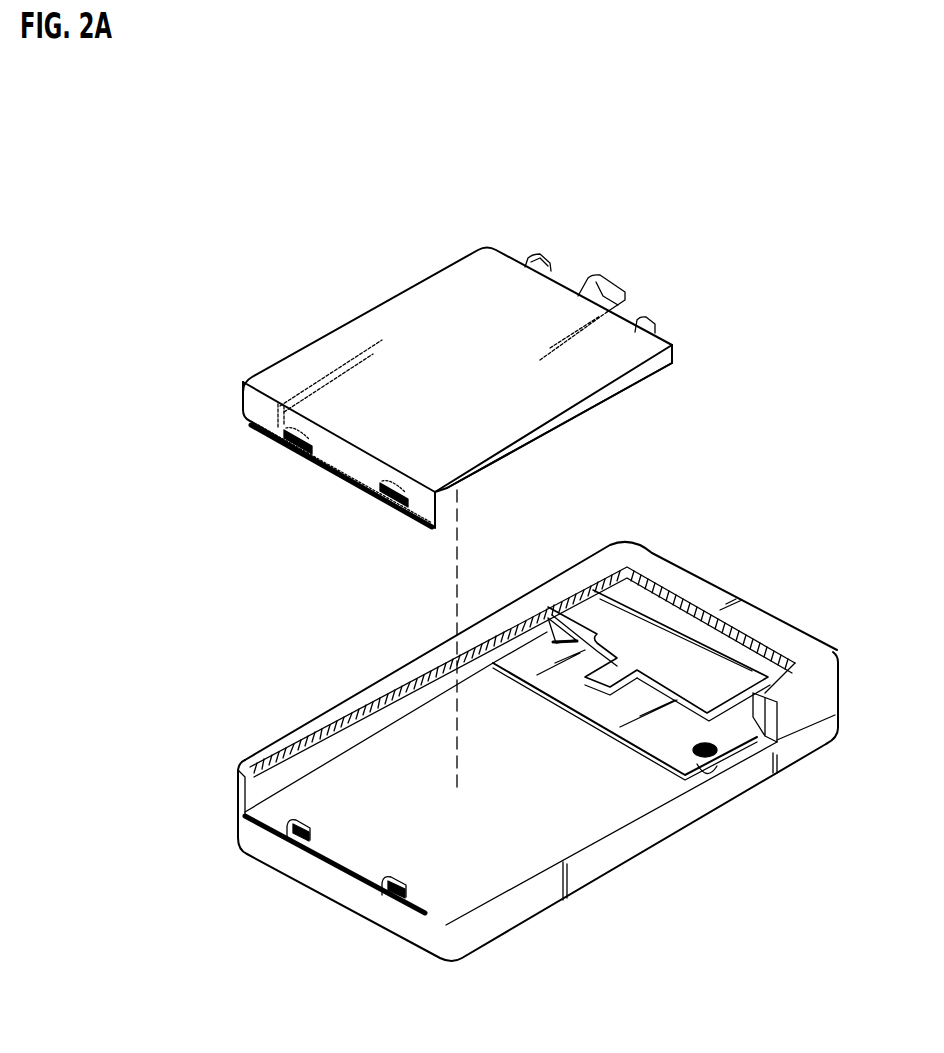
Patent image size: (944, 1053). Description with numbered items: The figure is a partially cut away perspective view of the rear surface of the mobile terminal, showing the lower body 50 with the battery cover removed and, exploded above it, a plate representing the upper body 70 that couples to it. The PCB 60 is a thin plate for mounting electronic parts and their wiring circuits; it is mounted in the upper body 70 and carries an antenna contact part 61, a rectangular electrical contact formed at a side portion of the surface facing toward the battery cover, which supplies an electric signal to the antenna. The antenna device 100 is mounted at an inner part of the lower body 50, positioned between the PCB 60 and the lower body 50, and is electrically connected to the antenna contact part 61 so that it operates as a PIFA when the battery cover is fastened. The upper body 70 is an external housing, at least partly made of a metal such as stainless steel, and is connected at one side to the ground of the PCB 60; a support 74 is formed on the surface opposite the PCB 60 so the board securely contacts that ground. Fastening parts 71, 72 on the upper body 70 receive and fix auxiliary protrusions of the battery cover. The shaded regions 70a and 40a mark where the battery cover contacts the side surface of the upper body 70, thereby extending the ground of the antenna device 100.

The contact region of the battery cover 40a is at (310, 464).
The lower body 50 is at (773, 614).
The PCB 60 is at (727, 740).
The antenna contact part 61 is at (547, 617).
The upper body 70 is at (837, 728).
The contact region of the upper body 70a is at (332, 868).
The fastening part 71 is at (298, 814).
The fastening part 72 is at (410, 892).
The support 74 is at (703, 765).
The antenna device 100 is at (677, 633).